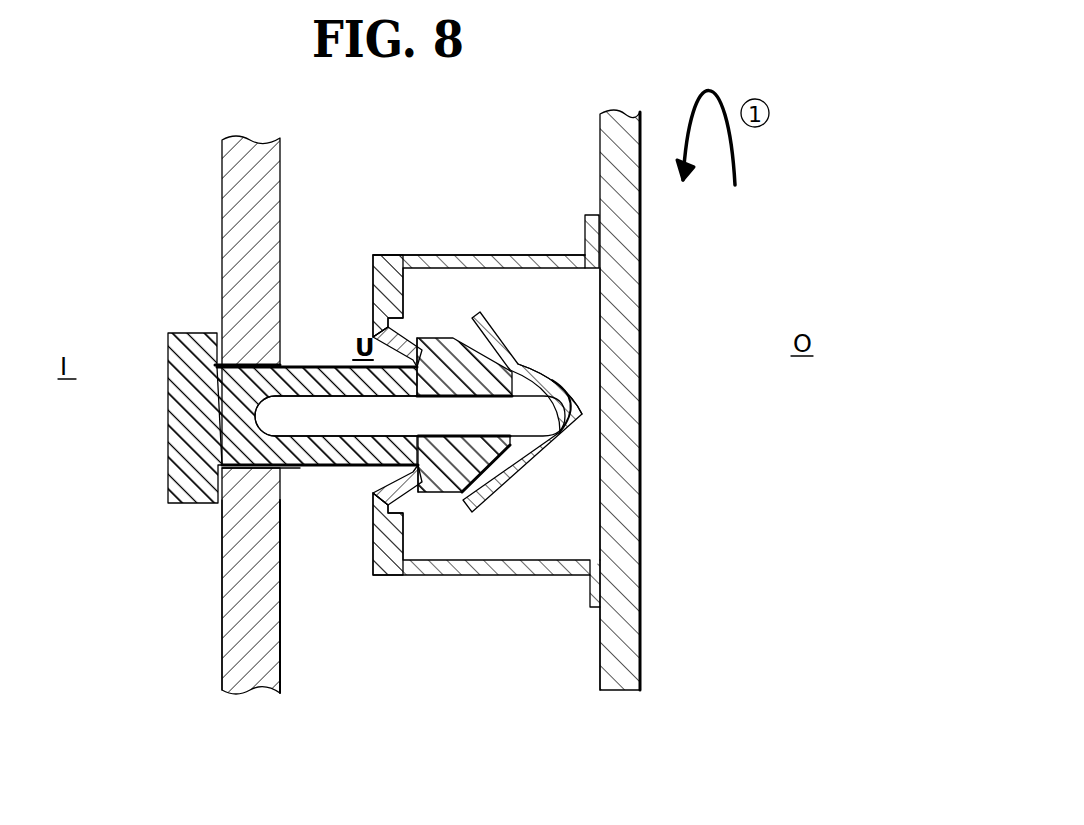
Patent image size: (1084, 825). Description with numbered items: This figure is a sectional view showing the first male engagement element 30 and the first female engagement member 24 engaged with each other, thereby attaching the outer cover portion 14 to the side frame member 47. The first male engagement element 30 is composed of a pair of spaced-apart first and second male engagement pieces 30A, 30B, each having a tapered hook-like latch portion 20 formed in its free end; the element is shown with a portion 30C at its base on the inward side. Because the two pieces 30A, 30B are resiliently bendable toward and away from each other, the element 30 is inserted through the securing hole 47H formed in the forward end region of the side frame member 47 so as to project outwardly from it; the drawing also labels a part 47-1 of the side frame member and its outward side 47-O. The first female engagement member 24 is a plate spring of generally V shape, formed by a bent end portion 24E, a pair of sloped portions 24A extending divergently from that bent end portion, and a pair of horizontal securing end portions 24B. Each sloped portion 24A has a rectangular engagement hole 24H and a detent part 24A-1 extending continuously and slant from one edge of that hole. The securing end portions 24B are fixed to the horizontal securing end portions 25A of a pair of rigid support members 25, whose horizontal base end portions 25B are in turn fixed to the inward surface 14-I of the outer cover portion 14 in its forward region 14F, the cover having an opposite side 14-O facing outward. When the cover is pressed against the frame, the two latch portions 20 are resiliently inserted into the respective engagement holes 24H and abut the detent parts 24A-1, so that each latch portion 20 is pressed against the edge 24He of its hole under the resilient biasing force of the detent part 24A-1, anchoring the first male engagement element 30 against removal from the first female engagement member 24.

The side frame member 47 is at (222, 196).
The securing hole 47H is at (232, 466).
The wall portion 47-1 is at (225, 640).
The outer surface of wall 47-O is at (283, 655).
The first male engagement element 30 is at (327, 396).
The first male engagement piece 30A is at (345, 365).
The second male engagement piece 30B is at (312, 468).
The shaft head 30C is at (170, 455).
The first female engagement member 24 is at (511, 417).
The sloped portion 24A is at (388, 328).
The detent part 24A-1 is at (502, 337).
The horizontal securing end portion 24B is at (371, 290).
The bent end portion 24E is at (580, 410).
The rectangular engagement hole 24H is at (430, 330).
The edge of the engagement hole 24He is at (447, 345).
The rigid support member 25 is at (472, 424).
The horizontal securing end portion of support member 25A is at (405, 300).
The horizontal base end portion 25B is at (575, 245).
The tapered hook-like latch portion 20 is at (458, 332).
The outer cover portion 14 is at (642, 240).
The panel outer surface 14-O is at (645, 443).
The inward surface of outer cover portion 14-I is at (598, 512).
The forward region of outer cover portion 14F is at (645, 580).